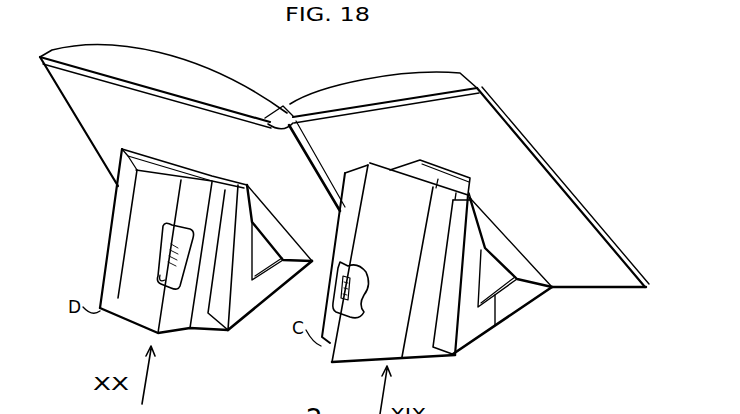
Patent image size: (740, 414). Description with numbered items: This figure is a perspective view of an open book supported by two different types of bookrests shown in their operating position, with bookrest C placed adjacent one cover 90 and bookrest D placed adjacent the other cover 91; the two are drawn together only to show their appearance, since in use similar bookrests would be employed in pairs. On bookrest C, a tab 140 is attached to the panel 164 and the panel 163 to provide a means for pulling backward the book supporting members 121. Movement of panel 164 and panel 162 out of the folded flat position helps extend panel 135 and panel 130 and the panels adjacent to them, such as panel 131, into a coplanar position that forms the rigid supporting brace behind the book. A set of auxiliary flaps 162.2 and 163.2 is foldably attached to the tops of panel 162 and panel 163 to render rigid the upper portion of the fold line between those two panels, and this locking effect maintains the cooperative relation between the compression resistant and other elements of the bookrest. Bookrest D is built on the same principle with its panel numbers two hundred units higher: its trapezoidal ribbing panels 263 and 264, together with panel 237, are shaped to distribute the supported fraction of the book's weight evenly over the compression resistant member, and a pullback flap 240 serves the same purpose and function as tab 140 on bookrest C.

The cover 91 is at (107, 110).
The cover 90 is at (470, 125).
The panel 264 is at (170, 210).
The panel 237 is at (117, 232).
The pullback flap 240 is at (161, 286).
The panel 263 is at (180, 325).
The panel 163 is at (410, 212).
The panel 164 is at (360, 172).
The auxiliary flap 163.2 is at (439, 171).
The auxiliary flap 162.2 is at (467, 192).
The panel 162 is at (420, 347).
The tab 140 is at (362, 297).
The panel 131 is at (522, 262).
The panel 130 is at (527, 301).
The book supporting members 121 is at (506, 336).
The panel 135 is at (478, 340).